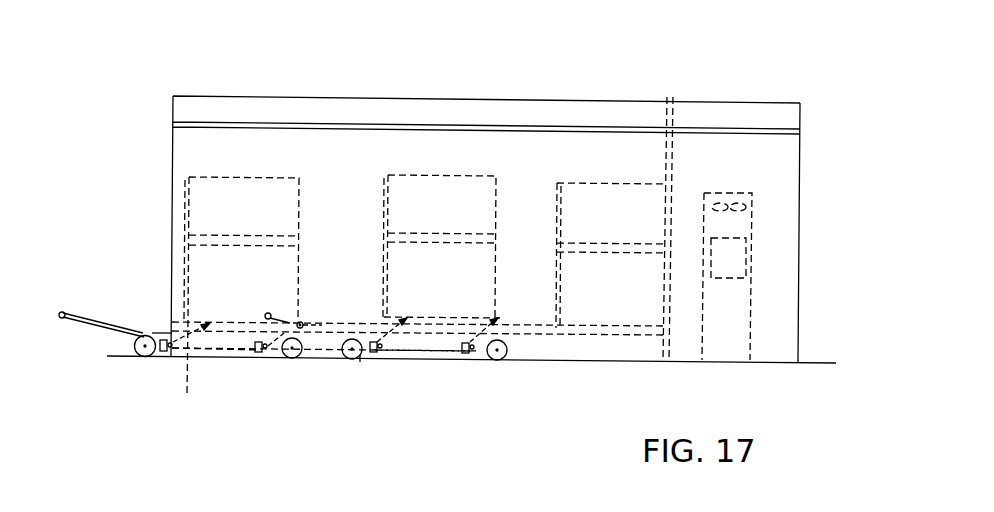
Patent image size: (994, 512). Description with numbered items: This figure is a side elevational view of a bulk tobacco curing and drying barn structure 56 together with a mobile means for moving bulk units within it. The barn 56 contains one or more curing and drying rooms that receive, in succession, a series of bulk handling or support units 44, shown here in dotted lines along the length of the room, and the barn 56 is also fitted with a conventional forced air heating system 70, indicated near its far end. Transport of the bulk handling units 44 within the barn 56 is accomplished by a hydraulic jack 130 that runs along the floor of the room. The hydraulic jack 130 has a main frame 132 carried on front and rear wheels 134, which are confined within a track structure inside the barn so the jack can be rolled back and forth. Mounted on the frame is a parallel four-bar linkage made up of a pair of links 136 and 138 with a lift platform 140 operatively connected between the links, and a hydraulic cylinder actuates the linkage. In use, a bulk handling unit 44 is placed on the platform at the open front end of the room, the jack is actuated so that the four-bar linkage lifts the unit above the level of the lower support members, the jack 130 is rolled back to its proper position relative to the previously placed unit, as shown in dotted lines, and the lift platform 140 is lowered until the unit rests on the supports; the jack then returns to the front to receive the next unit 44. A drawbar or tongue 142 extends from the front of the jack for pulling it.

The curing and drying barn structure 56 is at (288, 73).
The bulk handling or support unit 44 is at (300, 154).
The forced air heating system 70 is at (774, 189).
The hydraulic jack 130 is at (359, 359).
The main frame 132 is at (163, 352).
The front and rear wheels 134 is at (141, 350).
The link 136 is at (187, 393).
The link 138 is at (258, 354).
The lift platform 140 is at (380, 322).
The tongue 142 is at (88, 323).